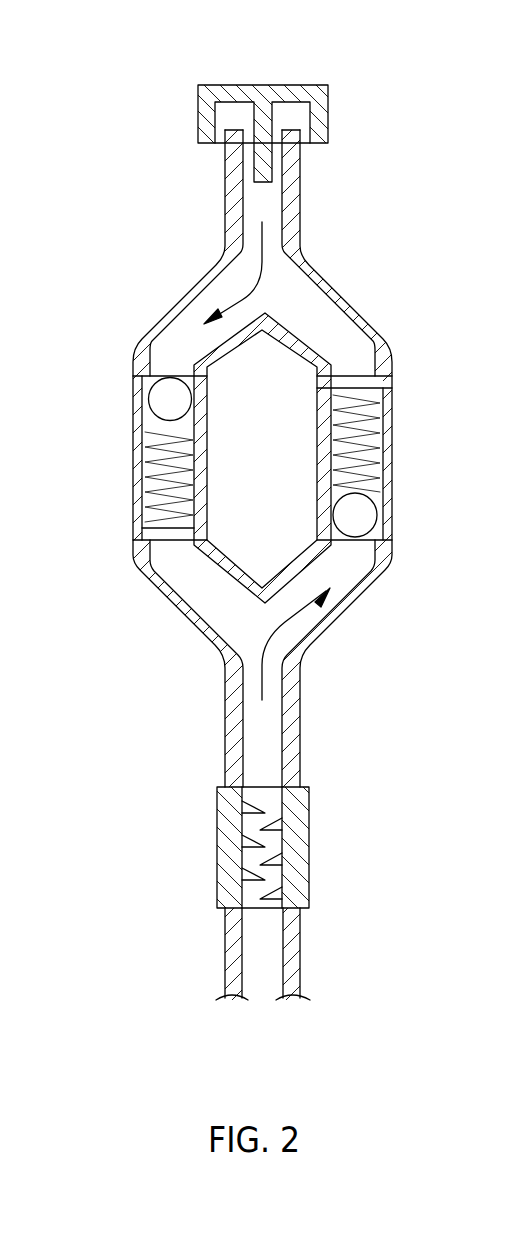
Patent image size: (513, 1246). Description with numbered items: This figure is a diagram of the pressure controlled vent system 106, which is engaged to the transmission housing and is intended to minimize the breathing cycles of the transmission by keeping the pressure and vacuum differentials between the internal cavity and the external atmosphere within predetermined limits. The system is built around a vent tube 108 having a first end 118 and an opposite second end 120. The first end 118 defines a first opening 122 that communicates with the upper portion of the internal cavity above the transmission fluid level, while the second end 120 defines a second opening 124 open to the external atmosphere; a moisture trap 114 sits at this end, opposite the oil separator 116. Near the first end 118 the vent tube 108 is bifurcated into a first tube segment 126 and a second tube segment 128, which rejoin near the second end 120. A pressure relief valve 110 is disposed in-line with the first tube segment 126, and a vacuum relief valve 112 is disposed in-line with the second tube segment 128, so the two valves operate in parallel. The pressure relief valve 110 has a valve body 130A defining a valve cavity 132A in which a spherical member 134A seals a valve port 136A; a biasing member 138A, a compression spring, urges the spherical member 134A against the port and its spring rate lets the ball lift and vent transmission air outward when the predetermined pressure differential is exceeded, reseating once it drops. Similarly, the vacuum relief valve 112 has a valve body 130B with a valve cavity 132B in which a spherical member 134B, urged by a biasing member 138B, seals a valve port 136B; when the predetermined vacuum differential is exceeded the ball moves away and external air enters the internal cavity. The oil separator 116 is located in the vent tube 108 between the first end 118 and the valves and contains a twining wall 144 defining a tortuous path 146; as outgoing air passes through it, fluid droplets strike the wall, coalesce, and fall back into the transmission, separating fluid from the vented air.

The pressure controlled vent system 106 is at (400, 293).
The vent tube 108 is at (302, 229).
The pressure relief valve 110 is at (415, 516).
The vacuum relief valve 112 is at (125, 446).
The moisture trap 114 is at (264, 85).
The oil separator 116 is at (256, 550).
The first end 118 is at (237, 970).
The second end 120 is at (243, 136).
The first opening 122 is at (267, 932).
The second opening 124 is at (278, 130).
The first tube segment 126 is at (375, 607).
The second tube segment 128 is at (175, 609).
The valve body 130A is at (395, 538).
The valve body 130B is at (141, 540).
The valve cavity 132A is at (385, 480).
The valve cavity 132B is at (150, 490).
The spherical member 134A is at (362, 513).
The spherical member 134B is at (150, 376).
The valve port 136A is at (352, 545).
The valve port 136B is at (167, 392).
The biasing member 138A is at (395, 395).
The biasing member 138B is at (165, 545).
The twining wall 144 is at (290, 812).
The tortuous path 146 is at (250, 828).